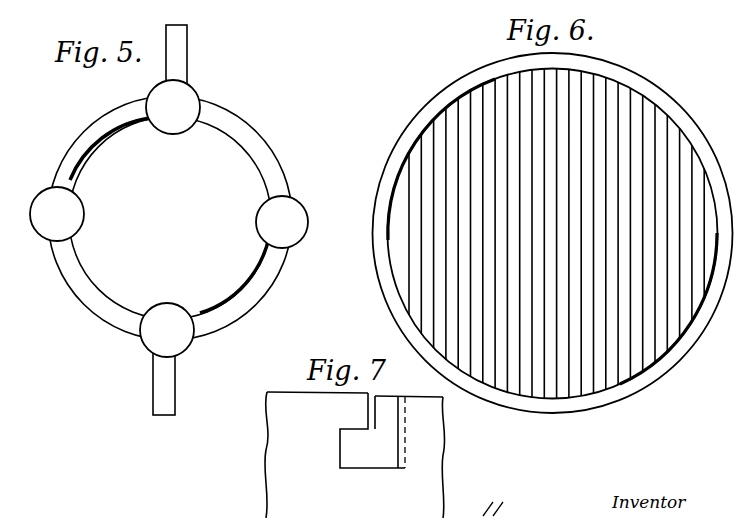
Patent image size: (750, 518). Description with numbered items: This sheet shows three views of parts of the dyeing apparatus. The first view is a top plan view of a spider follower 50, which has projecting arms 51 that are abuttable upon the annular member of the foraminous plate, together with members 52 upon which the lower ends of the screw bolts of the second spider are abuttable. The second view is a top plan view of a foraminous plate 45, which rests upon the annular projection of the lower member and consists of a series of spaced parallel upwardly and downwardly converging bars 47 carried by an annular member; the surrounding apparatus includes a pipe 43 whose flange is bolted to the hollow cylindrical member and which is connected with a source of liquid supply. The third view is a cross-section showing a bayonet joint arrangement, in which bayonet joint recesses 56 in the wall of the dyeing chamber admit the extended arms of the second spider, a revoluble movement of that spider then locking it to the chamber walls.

In FIG. 5, the spider follower 50 is at (250, 146).
In FIG. 5, the projecting arms 51 is at (177, 44).
In FIG. 5, the members 52 is at (68, 219).
In FIG. 6, the pipe 43 is at (484, 72).
In FIG. 6, the foraminous plate 45 is at (680, 101).
In FIG. 6, the bars 47 is at (593, 88).
In FIG. 7, the bayonet joint recesses 56 is at (387, 445).